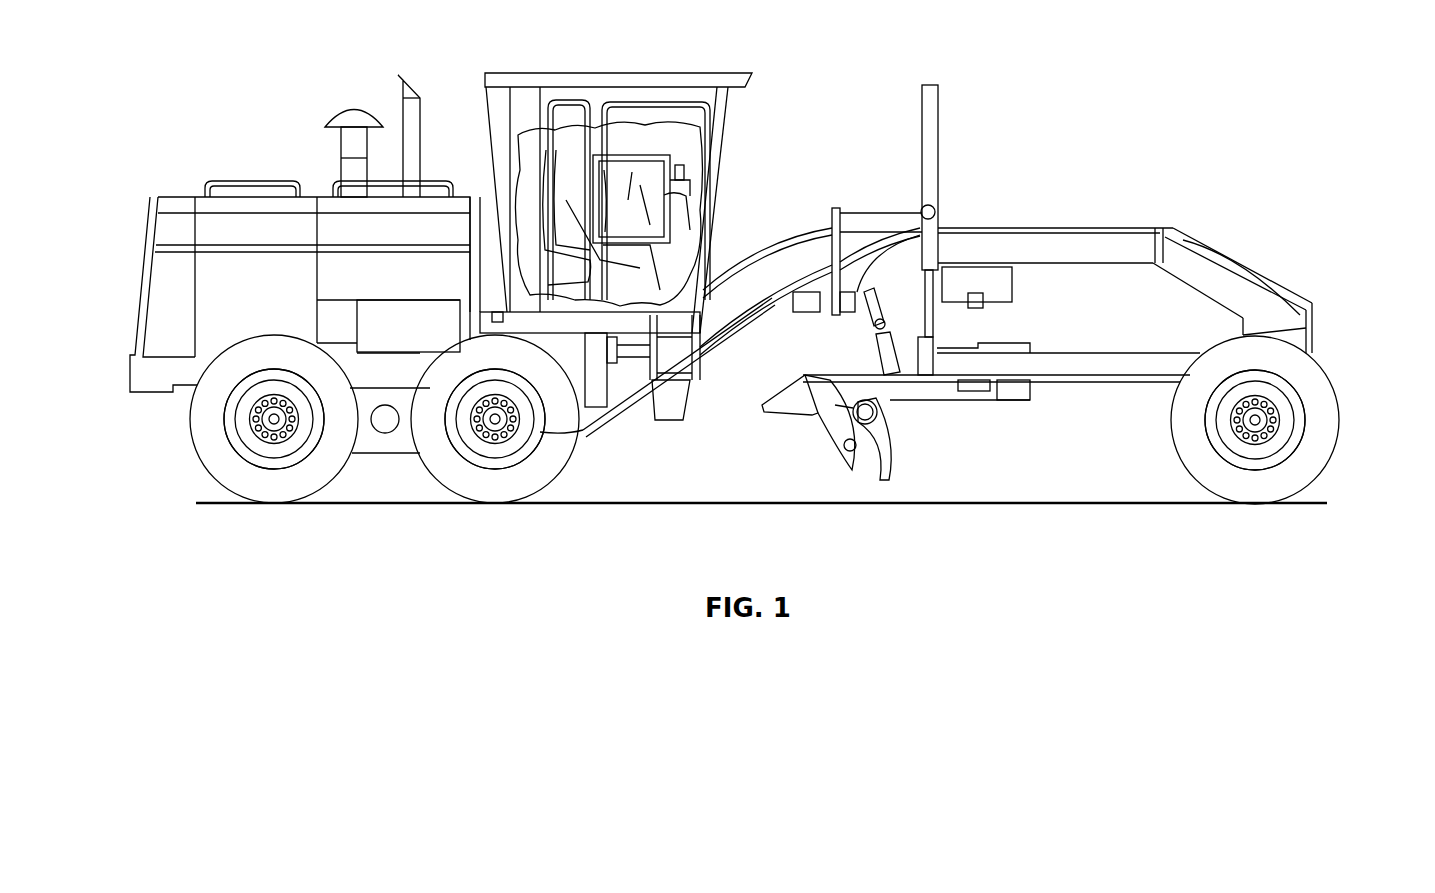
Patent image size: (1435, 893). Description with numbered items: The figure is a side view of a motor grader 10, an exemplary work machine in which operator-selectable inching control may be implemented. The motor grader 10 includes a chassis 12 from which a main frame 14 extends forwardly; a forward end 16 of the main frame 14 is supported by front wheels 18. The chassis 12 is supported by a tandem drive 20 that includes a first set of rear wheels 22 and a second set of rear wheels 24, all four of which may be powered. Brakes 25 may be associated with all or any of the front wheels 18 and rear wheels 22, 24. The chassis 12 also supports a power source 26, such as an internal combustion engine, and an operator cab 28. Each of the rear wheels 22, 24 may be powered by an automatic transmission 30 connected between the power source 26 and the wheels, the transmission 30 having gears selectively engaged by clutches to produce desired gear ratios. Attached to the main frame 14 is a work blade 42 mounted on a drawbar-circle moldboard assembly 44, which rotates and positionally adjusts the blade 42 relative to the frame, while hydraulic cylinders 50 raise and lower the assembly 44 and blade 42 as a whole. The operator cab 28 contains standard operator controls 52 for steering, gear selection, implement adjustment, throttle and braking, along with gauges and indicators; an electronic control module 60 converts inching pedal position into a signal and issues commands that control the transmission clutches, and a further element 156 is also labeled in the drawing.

The motor grader 10 is at (1032, 172).
The chassis 12 is at (387, 452).
The main frame 14 is at (722, 317).
The forward end 16 is at (1183, 235).
The front wheels 18 is at (1313, 387).
The tandem drive 20 is at (345, 525).
The first set of rear wheels 22 is at (533, 475).
The second set of rear wheels 24 is at (217, 450).
The brakes 25 is at (227, 402).
The power source 26 is at (213, 315).
The operator cab 28 is at (723, 138).
The automatic transmission 30 is at (373, 328).
The work blade 42 is at (885, 448).
The drawbar-circle moldboard assembly 44 is at (802, 423).
The hydraulic cylinders 50 is at (928, 252).
The operator controls 52 is at (638, 155).
The electronic control module 60 is at (683, 197).
The sensor 156 is at (683, 173).